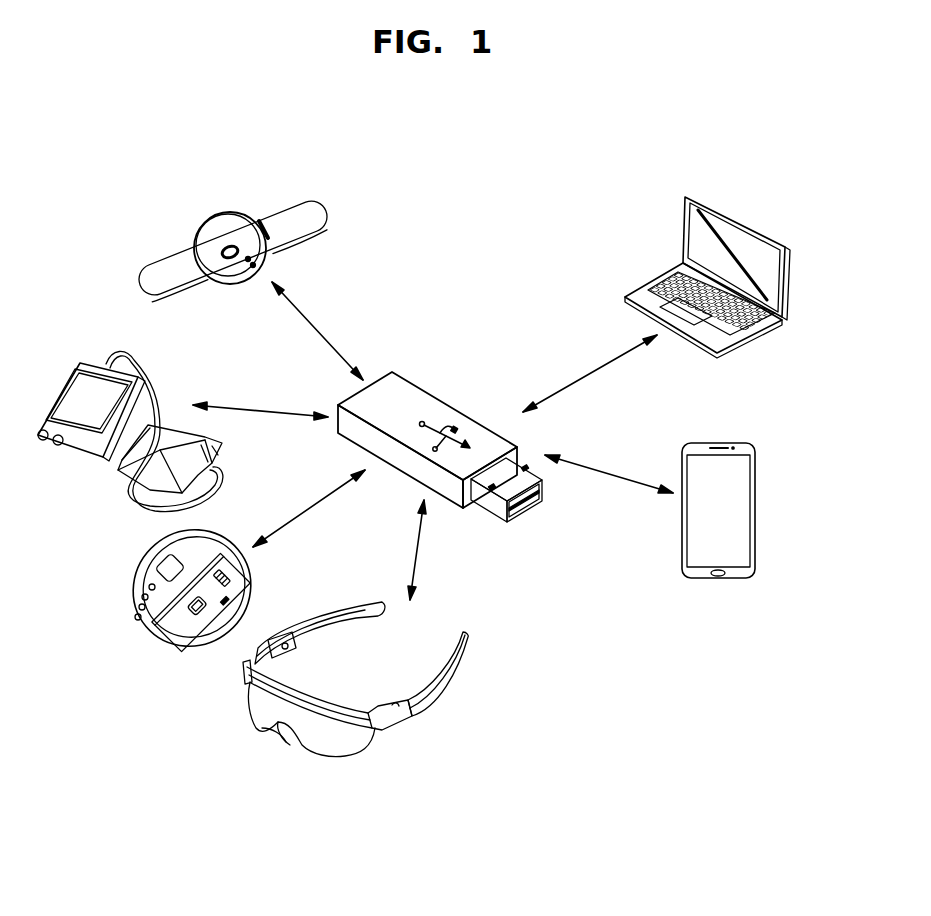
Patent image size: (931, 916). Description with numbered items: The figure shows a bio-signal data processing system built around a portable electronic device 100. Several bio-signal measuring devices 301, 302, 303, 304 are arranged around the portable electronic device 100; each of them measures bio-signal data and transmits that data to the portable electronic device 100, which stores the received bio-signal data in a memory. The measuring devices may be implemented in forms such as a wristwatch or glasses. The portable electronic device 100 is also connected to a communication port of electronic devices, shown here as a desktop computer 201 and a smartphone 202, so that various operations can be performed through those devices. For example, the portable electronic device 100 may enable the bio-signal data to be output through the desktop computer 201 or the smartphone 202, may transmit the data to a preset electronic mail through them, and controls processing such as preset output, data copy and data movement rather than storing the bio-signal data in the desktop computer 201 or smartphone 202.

The portable electronic device 100 is at (457, 407).
The desktop computer 201 is at (750, 340).
The smartphone 202 is at (718, 582).
The bio-signal measuring device 301 is at (208, 220).
The bio-signal measuring device 302 is at (67, 450).
The bio-signal measuring device 303 is at (163, 643).
The bio-signal measuring device 304 is at (307, 747).